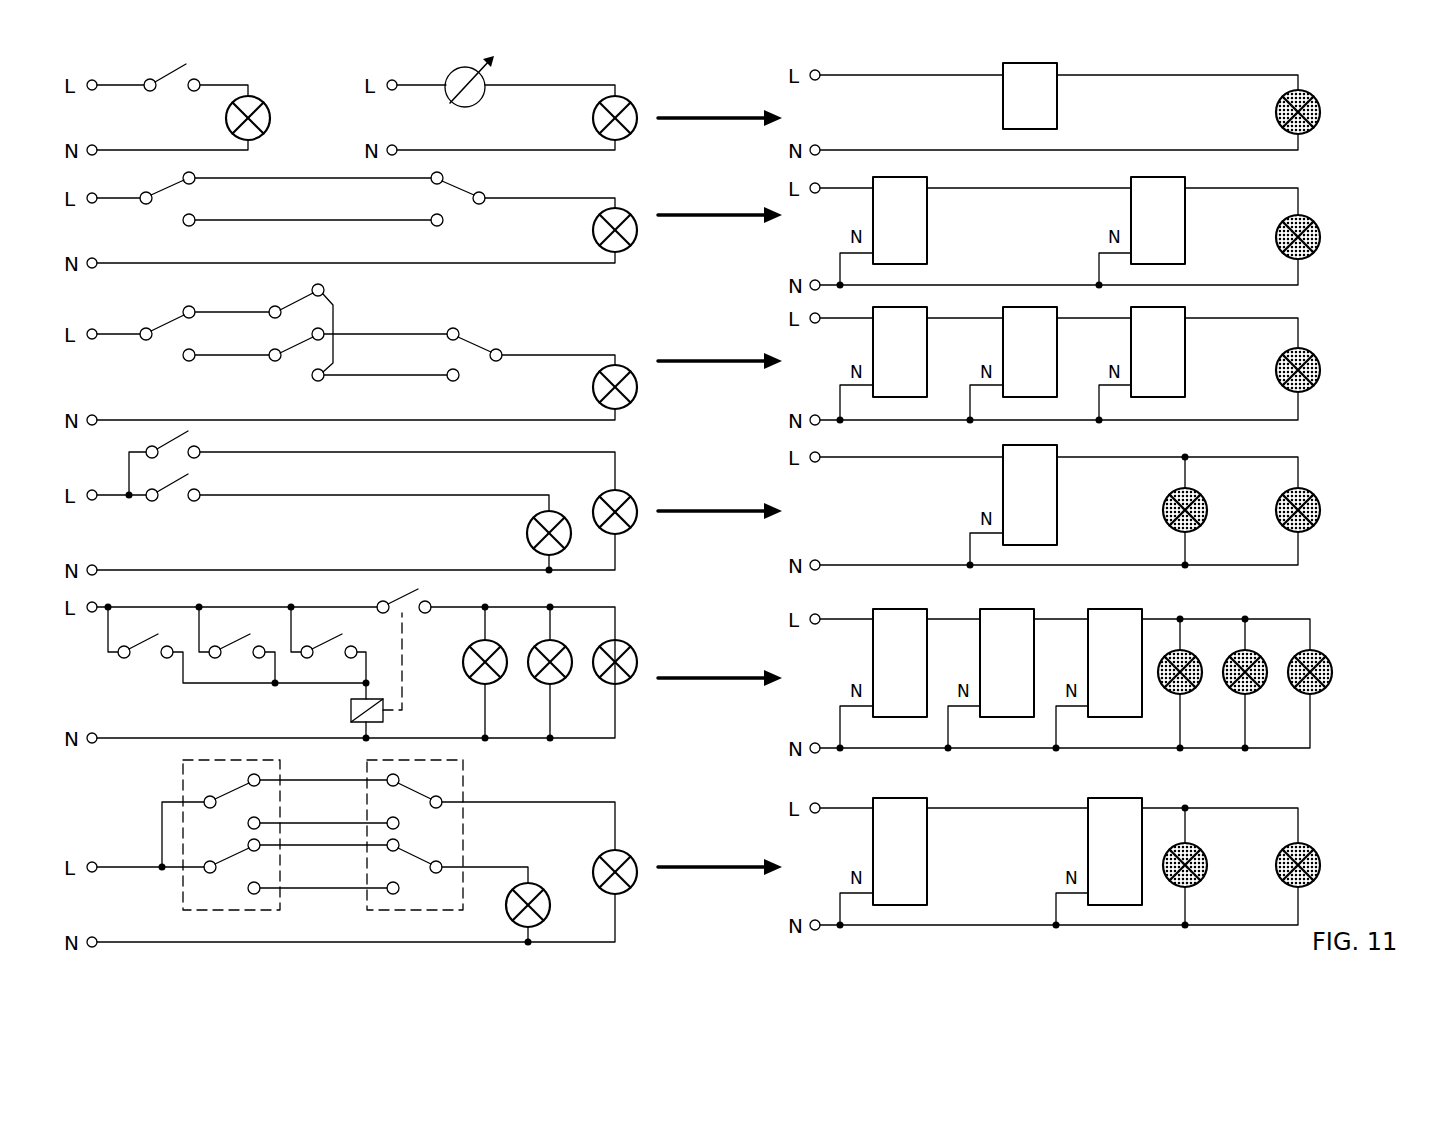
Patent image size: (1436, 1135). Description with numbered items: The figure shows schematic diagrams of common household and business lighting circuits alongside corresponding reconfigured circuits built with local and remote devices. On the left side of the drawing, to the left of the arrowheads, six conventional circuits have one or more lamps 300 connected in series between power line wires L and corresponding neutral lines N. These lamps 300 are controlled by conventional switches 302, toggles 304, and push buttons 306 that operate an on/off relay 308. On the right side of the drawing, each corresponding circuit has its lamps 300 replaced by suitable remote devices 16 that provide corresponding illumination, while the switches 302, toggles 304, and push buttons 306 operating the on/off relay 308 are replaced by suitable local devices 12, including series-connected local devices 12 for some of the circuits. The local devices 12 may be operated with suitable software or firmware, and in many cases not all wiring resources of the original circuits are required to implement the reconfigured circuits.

The local device 12 is at (1044, 108).
The remote device 16 is at (1321, 115).
The lamp 300 is at (270, 117).
The switch 302 is at (175, 73).
The toggle 304 is at (173, 203).
The push button 306 is at (147, 656).
The on/off relay 308 is at (404, 642).